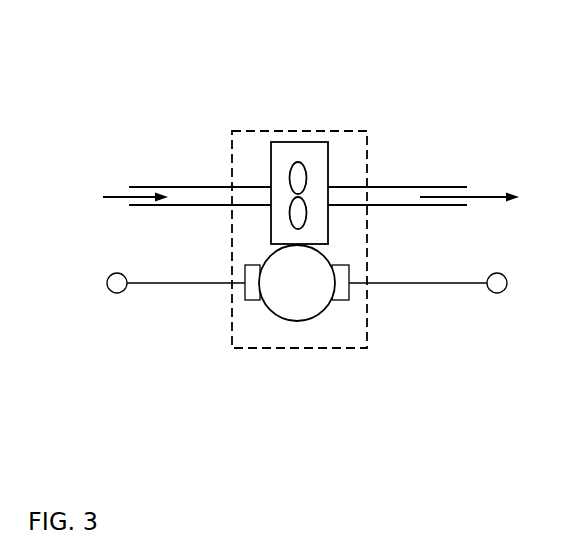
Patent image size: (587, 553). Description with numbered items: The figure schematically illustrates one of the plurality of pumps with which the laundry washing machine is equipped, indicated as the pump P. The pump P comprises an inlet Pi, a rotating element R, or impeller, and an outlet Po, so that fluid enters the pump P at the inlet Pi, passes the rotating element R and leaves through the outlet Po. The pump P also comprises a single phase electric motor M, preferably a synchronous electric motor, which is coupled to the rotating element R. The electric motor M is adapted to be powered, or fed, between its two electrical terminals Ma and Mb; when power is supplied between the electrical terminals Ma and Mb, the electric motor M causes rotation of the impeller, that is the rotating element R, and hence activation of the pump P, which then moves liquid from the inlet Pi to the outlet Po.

The pump P is at (340, 131).
The inlet Pi is at (120, 197).
The outlet Po is at (486, 197).
The rotating element R is at (288, 140).
The single phase electric motor M is at (323, 338).
The electrical terminal Ma is at (131, 324).
The electrical terminal Mb is at (509, 321).